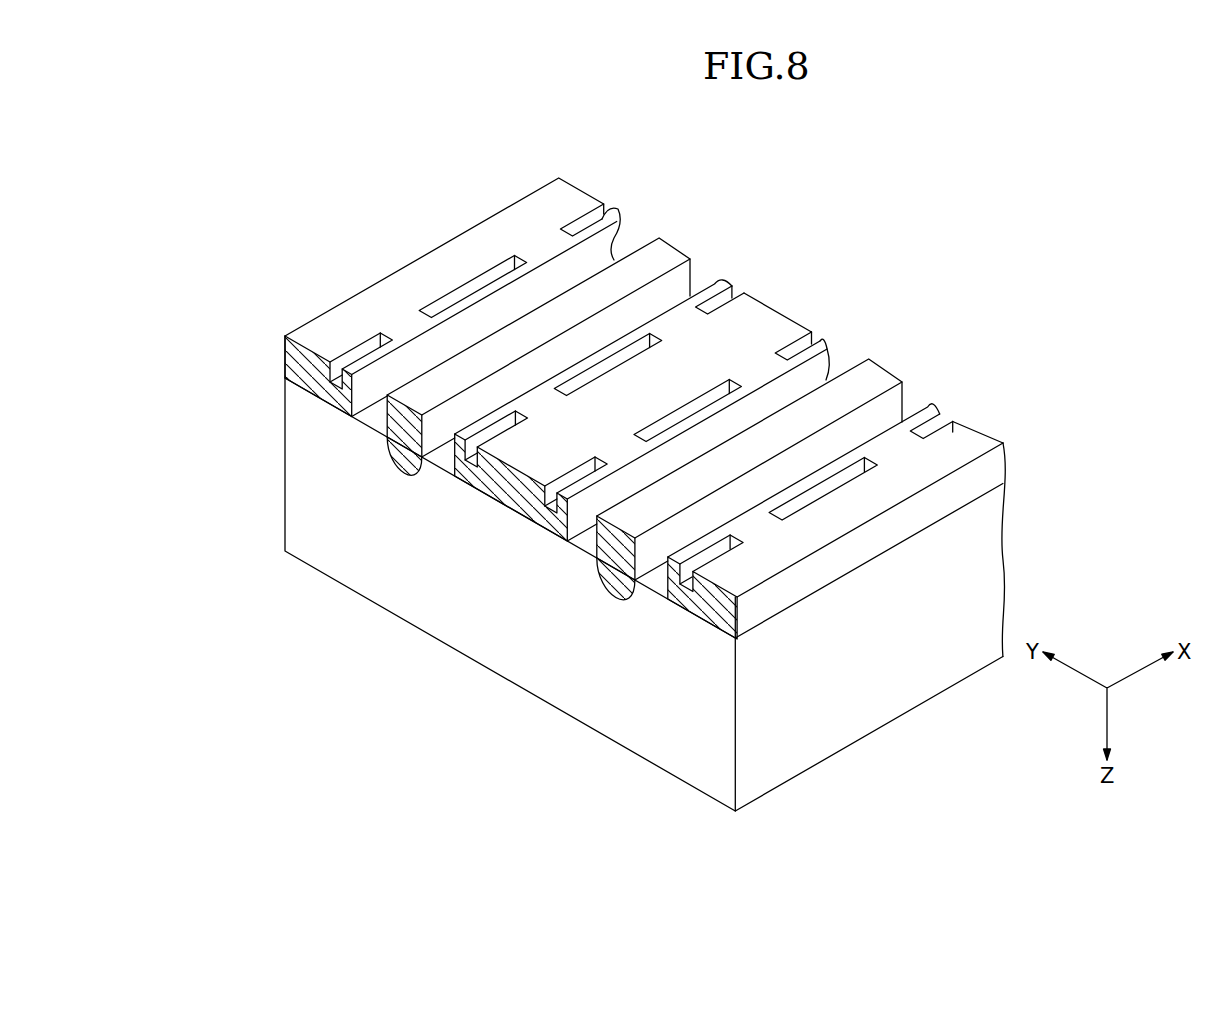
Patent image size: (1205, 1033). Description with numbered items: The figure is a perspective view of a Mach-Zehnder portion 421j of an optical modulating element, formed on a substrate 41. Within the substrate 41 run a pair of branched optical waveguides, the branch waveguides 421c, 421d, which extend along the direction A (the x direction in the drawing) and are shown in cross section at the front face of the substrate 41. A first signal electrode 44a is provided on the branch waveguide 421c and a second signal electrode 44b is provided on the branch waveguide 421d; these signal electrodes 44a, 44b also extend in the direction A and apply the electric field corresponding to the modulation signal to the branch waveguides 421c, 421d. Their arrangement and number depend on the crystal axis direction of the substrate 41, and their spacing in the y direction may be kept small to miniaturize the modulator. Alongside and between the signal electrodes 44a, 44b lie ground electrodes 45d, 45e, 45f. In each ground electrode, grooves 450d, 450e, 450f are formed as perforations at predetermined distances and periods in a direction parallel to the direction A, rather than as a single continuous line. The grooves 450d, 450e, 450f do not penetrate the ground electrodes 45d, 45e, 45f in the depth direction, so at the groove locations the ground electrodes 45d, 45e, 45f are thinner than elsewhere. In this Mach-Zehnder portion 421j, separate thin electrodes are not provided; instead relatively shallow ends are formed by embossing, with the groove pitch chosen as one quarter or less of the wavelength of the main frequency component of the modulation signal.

The substrate 41 is at (692, 737).
The signal electrode 44a is at (630, 553).
The signal electrode 44b is at (395, 417).
The ground electrode 45d is at (574, 520).
The ground electrode 45e is at (742, 613).
The ground electrode 45f is at (283, 348).
The groove 450d is at (743, 285).
The groove 450e is at (953, 412).
The groove 450f is at (612, 202).
The branch waveguide 421c is at (610, 588).
The branch waveguide 421d is at (422, 472).
The Mach-Zehnder portion 421j is at (1042, 267).